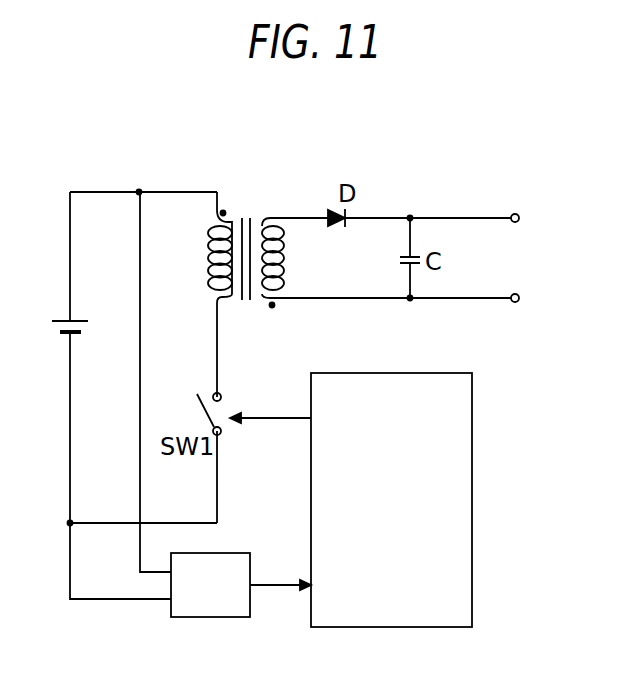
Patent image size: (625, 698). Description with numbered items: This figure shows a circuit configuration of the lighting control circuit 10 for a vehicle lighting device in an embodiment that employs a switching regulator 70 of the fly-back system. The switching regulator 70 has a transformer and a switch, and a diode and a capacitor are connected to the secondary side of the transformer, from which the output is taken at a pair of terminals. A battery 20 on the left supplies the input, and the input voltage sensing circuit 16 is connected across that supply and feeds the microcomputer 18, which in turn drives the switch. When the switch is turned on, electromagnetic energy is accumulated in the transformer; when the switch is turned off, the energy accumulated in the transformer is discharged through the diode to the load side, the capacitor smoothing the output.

The lighting control circuit 10 is at (104, 147).
The input voltage sensing circuit 16 is at (187, 617).
The microcomputer 18 is at (472, 458).
The battery 20 is at (60, 321).
The switching regulator 70 is at (207, 171).